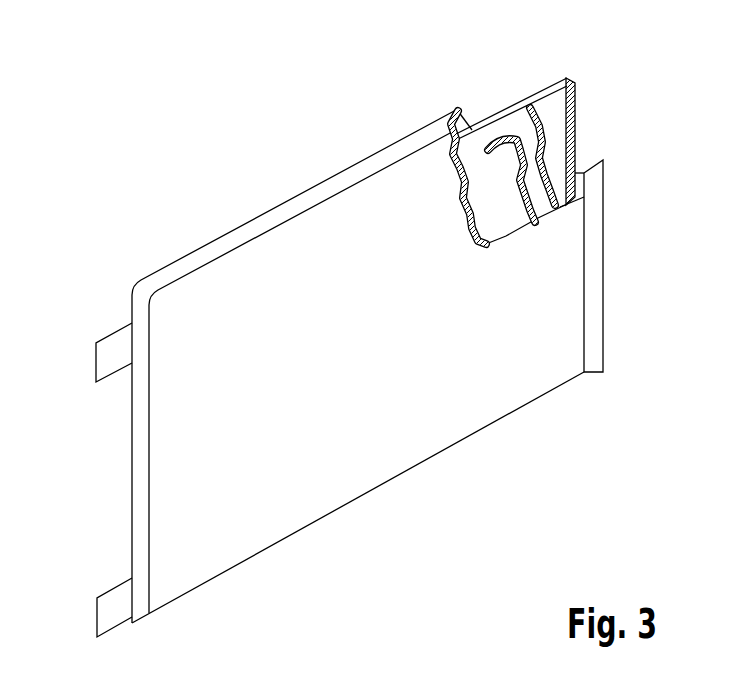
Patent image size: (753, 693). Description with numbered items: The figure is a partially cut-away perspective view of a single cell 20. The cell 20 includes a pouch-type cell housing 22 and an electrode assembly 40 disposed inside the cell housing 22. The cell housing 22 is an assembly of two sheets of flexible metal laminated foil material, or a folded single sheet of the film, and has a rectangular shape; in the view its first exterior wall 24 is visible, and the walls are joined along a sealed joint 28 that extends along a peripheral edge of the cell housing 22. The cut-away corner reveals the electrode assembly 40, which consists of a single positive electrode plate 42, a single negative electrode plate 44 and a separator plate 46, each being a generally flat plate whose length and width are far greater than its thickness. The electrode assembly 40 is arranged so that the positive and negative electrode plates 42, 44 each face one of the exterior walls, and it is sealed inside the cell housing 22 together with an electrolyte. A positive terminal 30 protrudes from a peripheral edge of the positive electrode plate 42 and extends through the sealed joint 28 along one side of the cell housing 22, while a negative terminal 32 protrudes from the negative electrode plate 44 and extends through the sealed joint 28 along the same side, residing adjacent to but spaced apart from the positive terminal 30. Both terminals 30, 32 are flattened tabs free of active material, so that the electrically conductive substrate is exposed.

The cell 20 is at (238, 173).
The cell housing 22 is at (273, 527).
The first exterior wall 24 is at (420, 443).
The sealed joint 28 is at (152, 567).
The positive terminal 30 is at (108, 355).
The negative terminal 32 is at (108, 610).
The electrode assembly 40 is at (586, 128).
The positive electrode plate 42 is at (480, 160).
The negative electrode plate 44 is at (555, 103).
The separator plate 46 is at (518, 128).